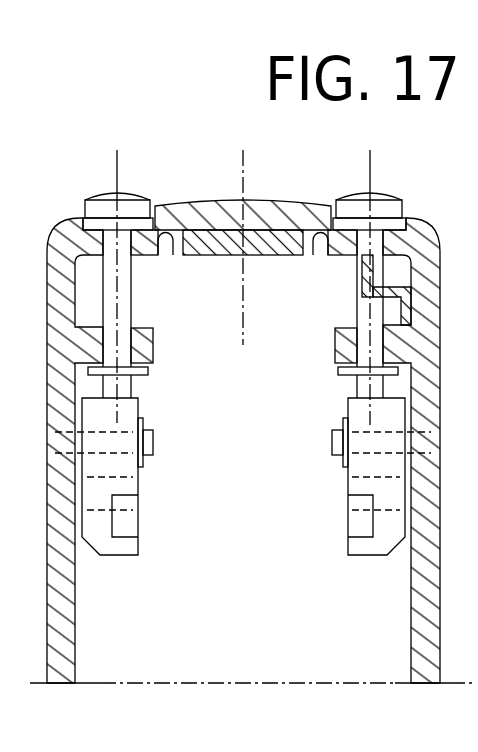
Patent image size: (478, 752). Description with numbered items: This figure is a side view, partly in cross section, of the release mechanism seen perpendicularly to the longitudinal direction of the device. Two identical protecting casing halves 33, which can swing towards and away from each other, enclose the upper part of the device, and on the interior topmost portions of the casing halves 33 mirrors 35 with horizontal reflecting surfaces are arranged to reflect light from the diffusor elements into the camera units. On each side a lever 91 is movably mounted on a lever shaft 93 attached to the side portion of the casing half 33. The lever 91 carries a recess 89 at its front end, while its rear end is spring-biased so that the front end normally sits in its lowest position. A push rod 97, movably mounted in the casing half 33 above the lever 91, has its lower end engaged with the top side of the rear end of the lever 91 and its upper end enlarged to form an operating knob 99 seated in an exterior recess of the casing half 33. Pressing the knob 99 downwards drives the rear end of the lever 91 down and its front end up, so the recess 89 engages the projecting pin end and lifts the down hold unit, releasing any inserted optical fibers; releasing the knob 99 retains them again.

The casing half 33 is at (277, 201).
The mirror 35 is at (213, 254).
The operating knob 99 is at (390, 203).
The push rod 97 is at (361, 314).
The lever shaft 93 is at (334, 443).
The lever 91 is at (357, 488).
The recess 89 is at (357, 532).